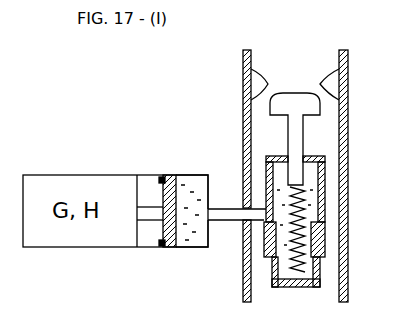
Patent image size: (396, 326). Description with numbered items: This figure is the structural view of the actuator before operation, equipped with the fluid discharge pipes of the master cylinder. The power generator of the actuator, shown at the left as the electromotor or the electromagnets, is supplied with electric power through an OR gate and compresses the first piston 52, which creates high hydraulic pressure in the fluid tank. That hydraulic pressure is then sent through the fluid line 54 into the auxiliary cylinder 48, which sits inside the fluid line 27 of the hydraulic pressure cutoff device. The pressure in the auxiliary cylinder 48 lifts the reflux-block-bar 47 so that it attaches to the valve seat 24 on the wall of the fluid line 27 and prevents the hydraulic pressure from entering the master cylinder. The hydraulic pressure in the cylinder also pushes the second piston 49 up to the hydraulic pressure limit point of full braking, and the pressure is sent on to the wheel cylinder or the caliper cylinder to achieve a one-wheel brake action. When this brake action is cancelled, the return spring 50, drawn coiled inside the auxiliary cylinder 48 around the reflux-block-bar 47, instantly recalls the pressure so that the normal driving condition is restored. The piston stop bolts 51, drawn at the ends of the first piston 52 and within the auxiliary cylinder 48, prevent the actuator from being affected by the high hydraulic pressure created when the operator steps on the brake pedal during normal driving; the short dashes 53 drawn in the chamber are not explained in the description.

The fluid line 27 is at (243, 51).
The valve seat 24 is at (250, 79).
The reflux-block-bar 47 is at (298, 135).
The auxiliary cylinder 48 is at (325, 165).
The second piston 49 is at (318, 272).
The return spring 50 is at (303, 205).
The piston stop bolt 51 is at (163, 178).
The first piston 52 is at (178, 176).
The fluid 53 is at (196, 186).
The fluid line 54 is at (224, 224).